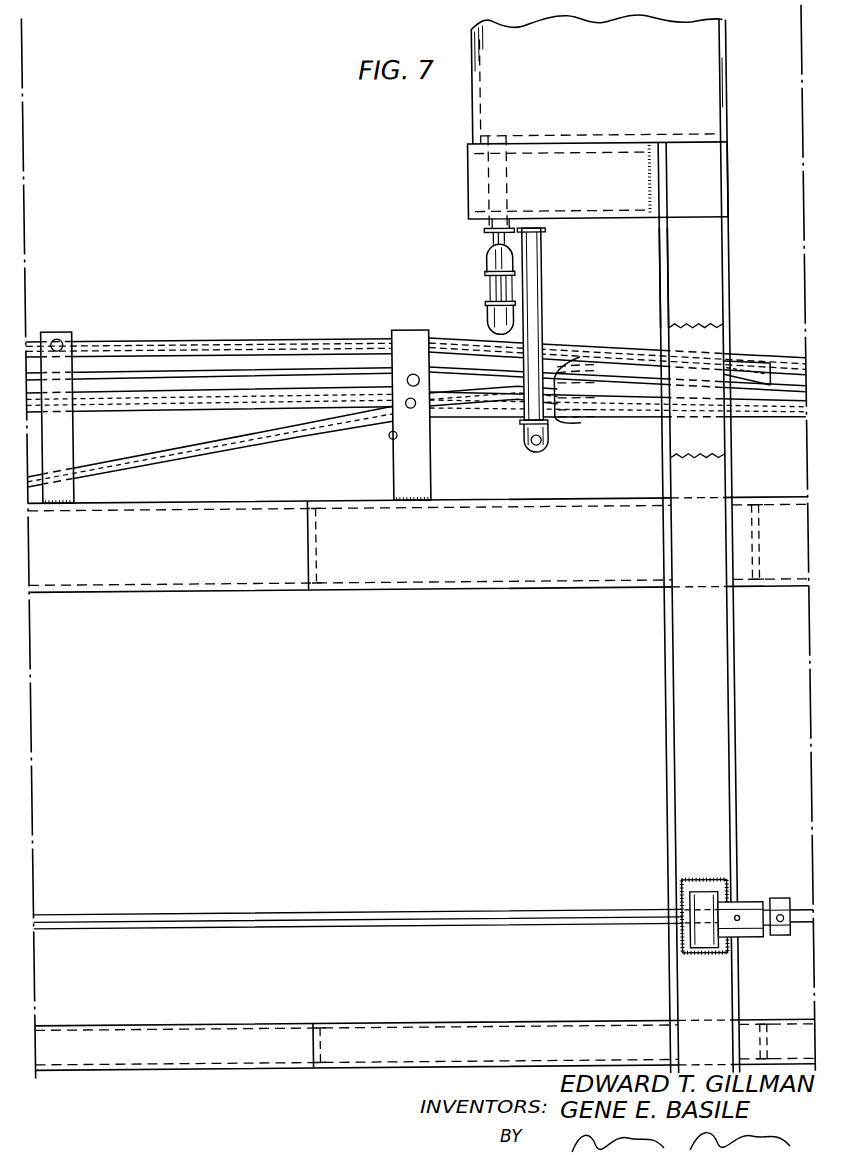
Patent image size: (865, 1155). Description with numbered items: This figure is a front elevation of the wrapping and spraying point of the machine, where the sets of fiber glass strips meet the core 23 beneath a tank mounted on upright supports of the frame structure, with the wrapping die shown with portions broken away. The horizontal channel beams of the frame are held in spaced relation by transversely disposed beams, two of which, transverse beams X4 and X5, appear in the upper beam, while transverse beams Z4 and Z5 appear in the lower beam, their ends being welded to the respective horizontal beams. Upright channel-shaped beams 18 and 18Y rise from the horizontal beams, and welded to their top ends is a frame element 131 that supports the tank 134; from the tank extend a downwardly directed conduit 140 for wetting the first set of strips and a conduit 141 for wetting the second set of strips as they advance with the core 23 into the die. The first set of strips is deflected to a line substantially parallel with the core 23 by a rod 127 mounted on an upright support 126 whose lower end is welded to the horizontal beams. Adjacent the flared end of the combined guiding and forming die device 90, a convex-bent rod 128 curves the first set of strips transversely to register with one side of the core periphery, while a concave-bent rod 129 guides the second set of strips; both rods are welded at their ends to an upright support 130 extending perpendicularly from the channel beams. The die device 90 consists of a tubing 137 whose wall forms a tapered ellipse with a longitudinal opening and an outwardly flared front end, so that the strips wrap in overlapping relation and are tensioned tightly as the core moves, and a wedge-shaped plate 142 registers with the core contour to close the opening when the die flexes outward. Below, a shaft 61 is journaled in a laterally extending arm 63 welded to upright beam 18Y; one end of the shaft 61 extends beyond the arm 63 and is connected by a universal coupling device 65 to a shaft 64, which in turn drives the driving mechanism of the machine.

The tank 134 is at (719, 74).
The frame element 131 is at (575, 206).
The upright channel-shaped beam 18Y is at (672, 264).
The upright channel-shaped beam 18 is at (673, 349).
The conduit 140 is at (501, 289).
The conduit 141 is at (534, 326).
The wedge-shaped plate 142 is at (738, 366).
The rod 127 is at (65, 338).
The convex-bent rod 128 is at (423, 376).
The upright support 126 is at (70, 446).
The core 23 is at (169, 396).
The concave-bent rod 129 is at (396, 432).
The upright support 130 is at (420, 462).
The tubing 137 is at (751, 412).
The combined guiding and forming die device 90 is at (634, 453).
The transversely disposed beam X4 is at (308, 564).
The transversely disposed beam X5 is at (756, 562).
The laterally extending arm 63 is at (694, 904).
The universal coupling device 65 is at (779, 888).
The shaft 61 is at (229, 923).
The shaft 64 is at (798, 923).
The transversely disposed beam Z4 is at (306, 1051).
The transversely disposed beam Z5 is at (752, 1043).